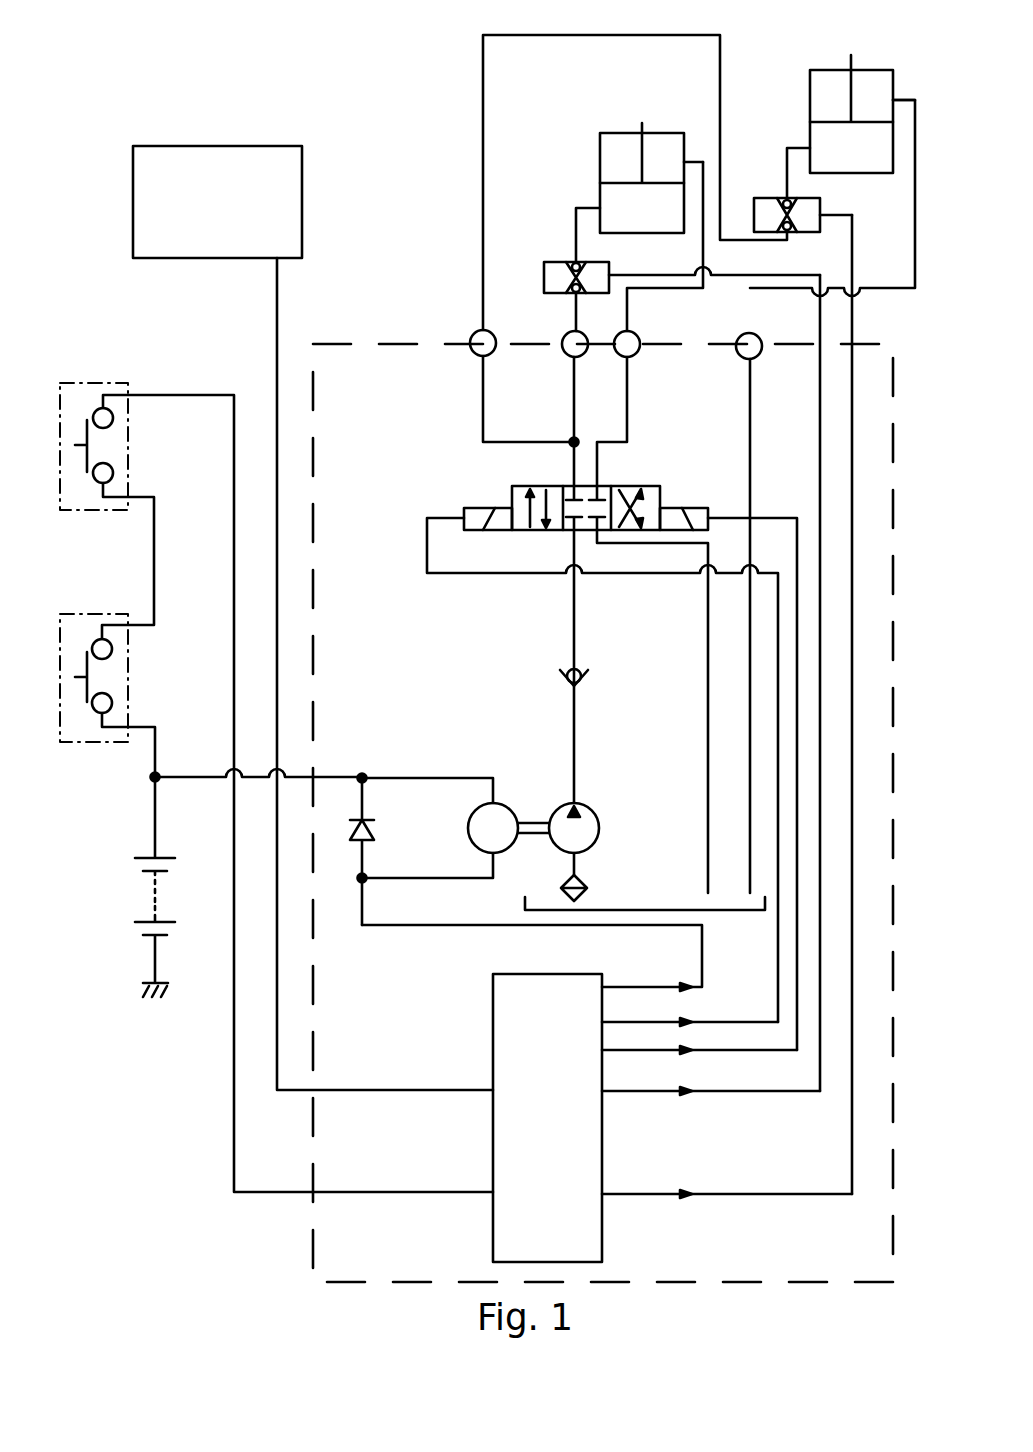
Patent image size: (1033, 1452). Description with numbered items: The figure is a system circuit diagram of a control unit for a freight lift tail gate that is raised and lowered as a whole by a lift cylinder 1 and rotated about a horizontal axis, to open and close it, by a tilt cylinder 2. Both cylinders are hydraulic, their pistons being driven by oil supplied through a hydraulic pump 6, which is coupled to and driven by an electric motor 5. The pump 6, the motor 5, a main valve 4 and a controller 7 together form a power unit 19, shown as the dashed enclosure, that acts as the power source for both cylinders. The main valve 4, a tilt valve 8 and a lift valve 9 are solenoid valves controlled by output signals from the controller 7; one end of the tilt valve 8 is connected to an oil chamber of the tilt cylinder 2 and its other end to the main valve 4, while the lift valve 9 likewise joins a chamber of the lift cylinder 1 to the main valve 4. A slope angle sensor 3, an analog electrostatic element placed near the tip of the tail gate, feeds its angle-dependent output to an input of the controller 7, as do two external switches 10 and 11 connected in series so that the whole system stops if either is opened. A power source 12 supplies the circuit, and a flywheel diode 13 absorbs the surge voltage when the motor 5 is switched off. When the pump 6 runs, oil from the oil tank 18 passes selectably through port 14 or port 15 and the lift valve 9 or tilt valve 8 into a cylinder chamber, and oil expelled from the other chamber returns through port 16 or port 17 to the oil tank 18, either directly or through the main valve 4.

The lift cylinder 1 is at (822, 97).
The tilt cylinder 2 is at (608, 160).
The slope angle sensor 3 is at (198, 258).
The main valve 4 is at (518, 486).
The electric motor 5 is at (477, 847).
The hydraulic pump 6 is at (598, 835).
The controller 7 is at (593, 1212).
The tilt valve 8 is at (544, 276).
The lift valve 9 is at (758, 217).
The external switch 10 is at (115, 445).
The external switch 11 is at (115, 677).
The power source 12 is at (125, 842).
The flywheel diode 13 is at (388, 851).
The port 14 is at (475, 335).
The port 15 is at (562, 355).
The port 16 is at (633, 355).
The port 17 is at (752, 355).
The oil tank 18 is at (618, 907).
The power unit 19 is at (310, 1232).